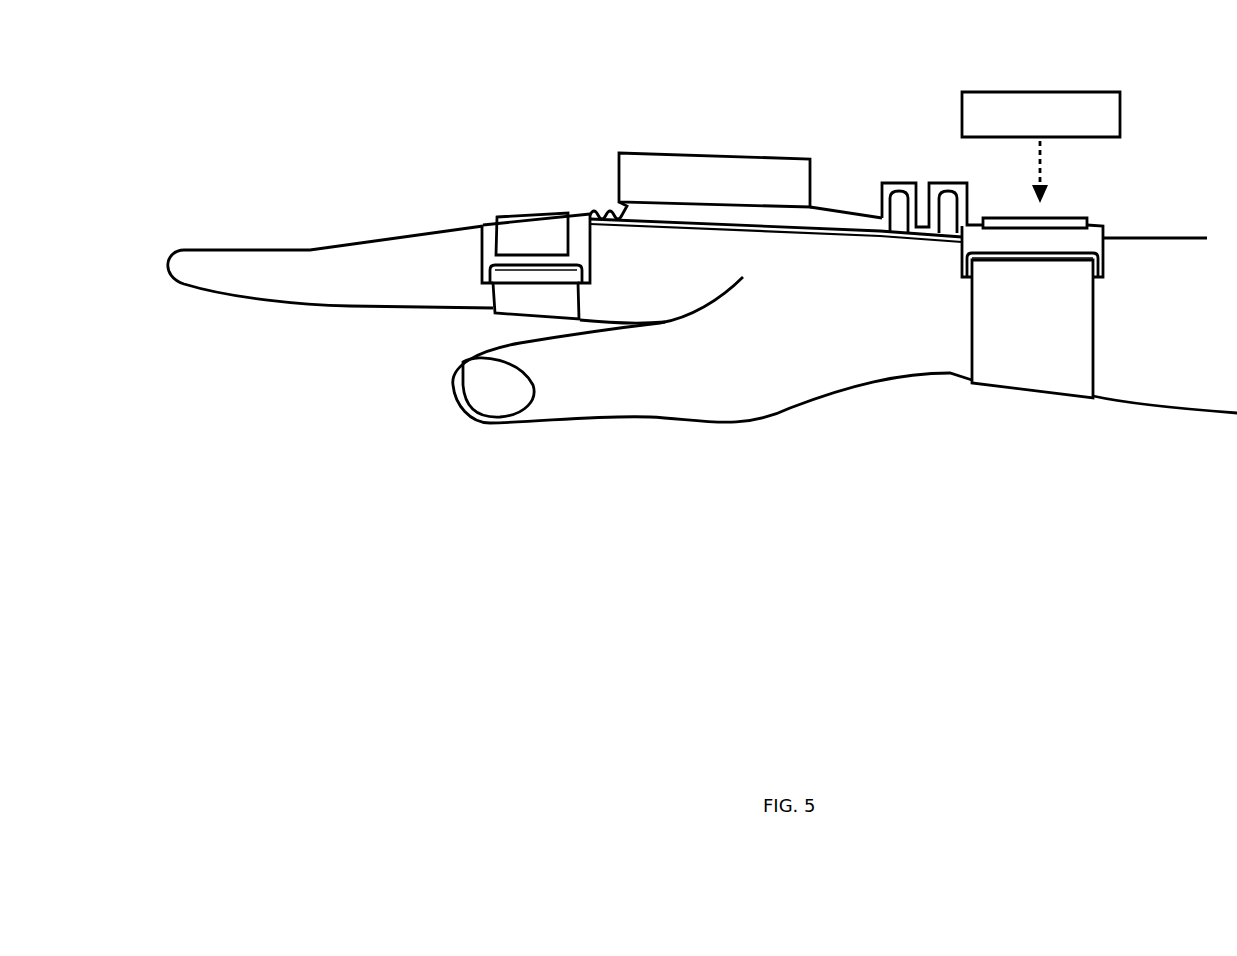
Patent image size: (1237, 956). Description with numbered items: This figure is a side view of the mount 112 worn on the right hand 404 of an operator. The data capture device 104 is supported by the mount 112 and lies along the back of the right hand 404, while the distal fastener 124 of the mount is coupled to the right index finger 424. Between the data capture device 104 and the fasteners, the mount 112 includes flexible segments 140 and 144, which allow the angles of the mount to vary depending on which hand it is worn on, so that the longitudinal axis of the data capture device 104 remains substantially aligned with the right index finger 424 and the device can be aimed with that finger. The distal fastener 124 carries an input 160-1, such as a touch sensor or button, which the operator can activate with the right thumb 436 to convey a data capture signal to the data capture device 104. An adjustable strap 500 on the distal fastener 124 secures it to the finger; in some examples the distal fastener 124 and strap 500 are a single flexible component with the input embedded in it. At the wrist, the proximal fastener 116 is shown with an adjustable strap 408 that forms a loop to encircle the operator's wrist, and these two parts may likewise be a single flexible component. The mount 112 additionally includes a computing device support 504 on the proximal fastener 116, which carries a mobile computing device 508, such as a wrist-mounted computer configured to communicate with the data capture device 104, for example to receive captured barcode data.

The data capture device 104 is at (698, 146).
The mount 112 is at (840, 208).
The proximal fastener 116 is at (1108, 223).
The distal fastener 124 is at (478, 220).
The flexible segment 140 is at (896, 200).
The flexible segment 144 is at (602, 205).
The input 160-1 is at (532, 234).
The right hand 404 is at (828, 337).
The adjustable strap 408 is at (1030, 375).
The right index finger 424 is at (307, 258).
The right thumb 436 is at (650, 390).
The adjustable strap 500 is at (512, 300).
The computing device support 504 is at (1073, 217).
The mobile computing device 508 is at (1041, 147).